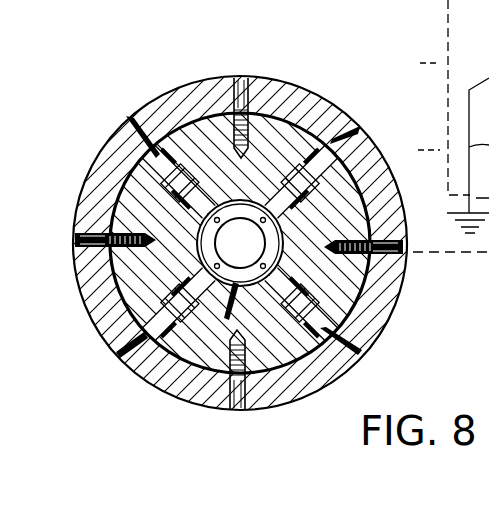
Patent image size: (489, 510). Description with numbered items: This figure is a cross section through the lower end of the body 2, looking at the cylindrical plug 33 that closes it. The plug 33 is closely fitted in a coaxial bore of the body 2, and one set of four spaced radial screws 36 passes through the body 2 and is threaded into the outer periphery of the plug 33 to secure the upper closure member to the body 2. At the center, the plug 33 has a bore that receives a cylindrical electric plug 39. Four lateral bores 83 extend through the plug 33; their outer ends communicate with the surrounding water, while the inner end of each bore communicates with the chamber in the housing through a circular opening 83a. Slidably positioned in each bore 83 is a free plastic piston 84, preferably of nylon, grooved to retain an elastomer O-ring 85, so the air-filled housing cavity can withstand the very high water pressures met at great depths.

The body 2 is at (330, 110).
The cylindrical plug 33 is at (250, 186).
The radial screws 36 is at (241, 410).
The cylindrical electric plug 39 is at (253, 258).
The lateral bores 83 is at (396, 373).
The circular opening 83a is at (226, 318).
The free plastic piston 84 is at (292, 292).
The elastomer O-ring 85 is at (318, 306).